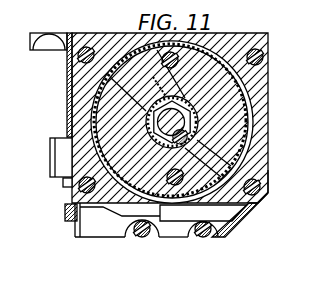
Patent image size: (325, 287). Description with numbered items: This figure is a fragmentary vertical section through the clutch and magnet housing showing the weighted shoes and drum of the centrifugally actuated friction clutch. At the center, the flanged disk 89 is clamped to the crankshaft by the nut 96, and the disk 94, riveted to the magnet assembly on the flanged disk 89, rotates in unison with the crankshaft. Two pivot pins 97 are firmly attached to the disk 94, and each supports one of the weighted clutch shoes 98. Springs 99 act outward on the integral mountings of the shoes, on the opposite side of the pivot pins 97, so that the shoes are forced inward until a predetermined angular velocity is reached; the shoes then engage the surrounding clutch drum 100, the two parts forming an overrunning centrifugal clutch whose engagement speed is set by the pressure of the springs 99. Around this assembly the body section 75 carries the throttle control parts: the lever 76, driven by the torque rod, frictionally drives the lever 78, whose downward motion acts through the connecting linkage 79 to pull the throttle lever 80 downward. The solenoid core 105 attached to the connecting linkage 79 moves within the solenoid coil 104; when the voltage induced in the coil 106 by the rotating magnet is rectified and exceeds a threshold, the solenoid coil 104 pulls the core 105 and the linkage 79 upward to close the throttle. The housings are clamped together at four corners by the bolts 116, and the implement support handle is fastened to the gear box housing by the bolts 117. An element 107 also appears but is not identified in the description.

The body section 75 is at (266, 45).
The lever 76 is at (77, 228).
The lever 78 is at (66, 210).
The connecting linkage 79 is at (70, 81).
The throttle lever 80 is at (66, 50).
The flanged disk 89 is at (95, 108).
The disk 94 is at (205, 106).
The nut 96 is at (205, 120).
The pivot pins 97 is at (228, 68).
The weighted clutch shoes 98 is at (220, 88).
The springs 99 is at (240, 138).
The clutch drum 100 is at (120, 205).
The solenoid coil 104 is at (60, 142).
The solenoid core 105 is at (64, 183).
The coil 106 is at (236, 231).
The slide plate 107 is at (220, 208).
The bolts 116 is at (262, 194).
The bolts 117 is at (197, 236).